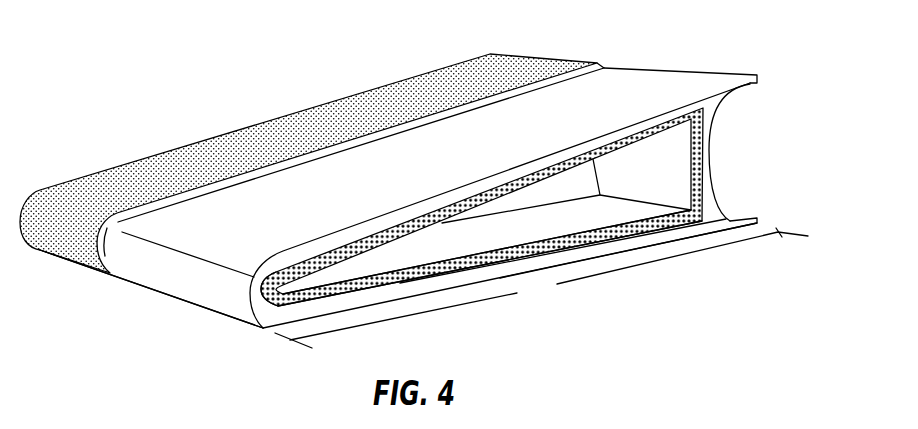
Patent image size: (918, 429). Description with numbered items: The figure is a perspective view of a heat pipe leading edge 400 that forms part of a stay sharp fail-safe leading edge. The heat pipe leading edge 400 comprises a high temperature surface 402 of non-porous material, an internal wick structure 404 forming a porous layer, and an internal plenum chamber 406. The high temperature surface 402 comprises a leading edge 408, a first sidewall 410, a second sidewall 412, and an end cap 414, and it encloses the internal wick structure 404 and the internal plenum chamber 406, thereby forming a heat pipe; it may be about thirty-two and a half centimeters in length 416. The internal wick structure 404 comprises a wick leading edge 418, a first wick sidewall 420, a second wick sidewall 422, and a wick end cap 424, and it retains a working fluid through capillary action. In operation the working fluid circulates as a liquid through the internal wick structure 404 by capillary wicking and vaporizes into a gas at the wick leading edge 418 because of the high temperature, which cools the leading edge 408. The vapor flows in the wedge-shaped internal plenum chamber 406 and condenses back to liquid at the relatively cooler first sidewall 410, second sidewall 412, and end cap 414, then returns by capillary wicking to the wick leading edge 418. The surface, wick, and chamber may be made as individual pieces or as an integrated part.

The heat pipe leading edge 400 is at (182, 60).
The high temperature surface 402 is at (430, 137).
The internal wick structure 404 is at (453, 268).
The internal plenum chamber 406 is at (612, 213).
The leading edge 408 is at (167, 278).
The first sidewall 410 is at (555, 150).
The second sidewall 412 is at (647, 250).
The end cap 414 is at (713, 133).
The length 416 is at (541, 288).
The wick leading edge 418 is at (277, 306).
The first wick sidewall 420 is at (625, 140).
The second wick sidewall 422 is at (597, 232).
The wick end cap 424 is at (673, 178).